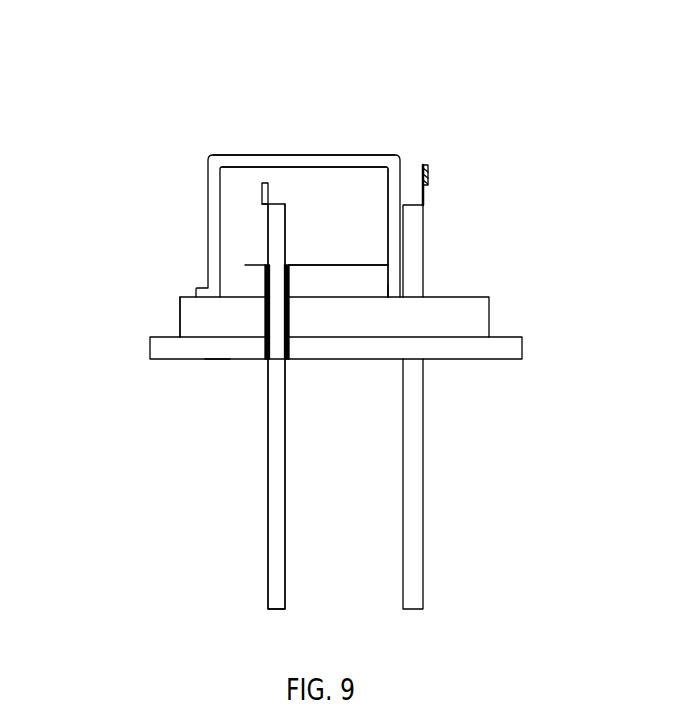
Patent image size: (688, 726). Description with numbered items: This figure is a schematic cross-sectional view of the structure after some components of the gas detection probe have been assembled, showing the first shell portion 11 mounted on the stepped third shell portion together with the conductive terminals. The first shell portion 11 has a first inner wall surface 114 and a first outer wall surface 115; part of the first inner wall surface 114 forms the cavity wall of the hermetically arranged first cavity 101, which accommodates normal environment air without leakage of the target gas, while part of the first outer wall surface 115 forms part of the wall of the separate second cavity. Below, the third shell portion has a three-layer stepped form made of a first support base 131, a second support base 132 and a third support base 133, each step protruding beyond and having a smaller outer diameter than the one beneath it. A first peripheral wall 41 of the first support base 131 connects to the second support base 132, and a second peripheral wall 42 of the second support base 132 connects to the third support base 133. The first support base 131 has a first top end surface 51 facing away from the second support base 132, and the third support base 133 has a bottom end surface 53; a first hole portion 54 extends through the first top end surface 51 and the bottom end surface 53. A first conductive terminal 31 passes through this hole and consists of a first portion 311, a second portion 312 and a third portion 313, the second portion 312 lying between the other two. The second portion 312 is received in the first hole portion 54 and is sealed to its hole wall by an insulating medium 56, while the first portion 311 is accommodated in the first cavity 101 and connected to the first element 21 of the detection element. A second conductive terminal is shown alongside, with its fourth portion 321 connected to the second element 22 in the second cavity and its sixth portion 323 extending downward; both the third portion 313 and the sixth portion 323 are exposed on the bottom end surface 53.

The first shell portion 11 is at (243, 156).
The first outer wall surface 115 is at (263, 158).
The first inner wall surface 114 is at (387, 217).
The first cavity 101 is at (342, 205).
The first top end surface 51 is at (318, 265).
The first element 21 is at (262, 192).
The second element 22 is at (427, 165).
The first conductive terminal 31 is at (283, 220).
The first portion 311 is at (275, 247).
The second portion 312 is at (277, 322).
The third portion 313 is at (275, 442).
The fourth portion 321 is at (413, 238).
The sixth portion 323 is at (415, 430).
The first support base 131 is at (375, 277).
The second support base 132 is at (488, 323).
The third support base 133 is at (512, 353).
The first peripheral wall 41 is at (390, 287).
The second peripheral wall 42 is at (180, 313).
The bottom end surface 53 is at (218, 362).
The first hole portion 54 is at (288, 310).
The insulating medium 56 is at (267, 287).